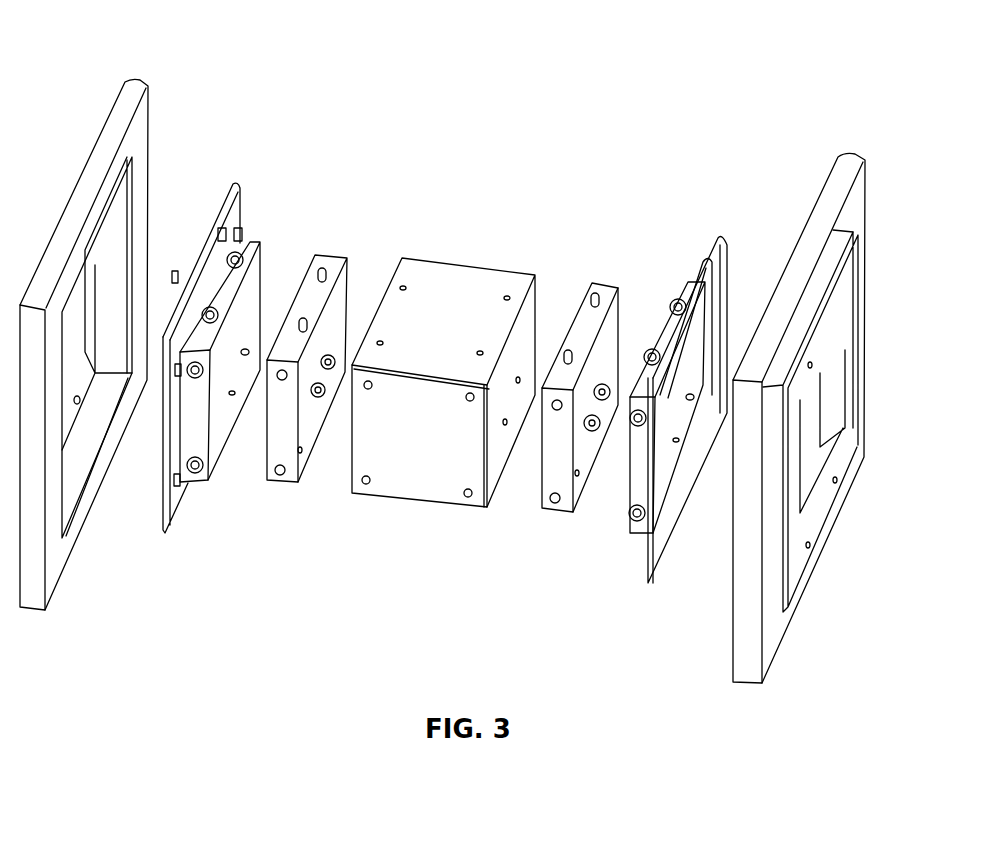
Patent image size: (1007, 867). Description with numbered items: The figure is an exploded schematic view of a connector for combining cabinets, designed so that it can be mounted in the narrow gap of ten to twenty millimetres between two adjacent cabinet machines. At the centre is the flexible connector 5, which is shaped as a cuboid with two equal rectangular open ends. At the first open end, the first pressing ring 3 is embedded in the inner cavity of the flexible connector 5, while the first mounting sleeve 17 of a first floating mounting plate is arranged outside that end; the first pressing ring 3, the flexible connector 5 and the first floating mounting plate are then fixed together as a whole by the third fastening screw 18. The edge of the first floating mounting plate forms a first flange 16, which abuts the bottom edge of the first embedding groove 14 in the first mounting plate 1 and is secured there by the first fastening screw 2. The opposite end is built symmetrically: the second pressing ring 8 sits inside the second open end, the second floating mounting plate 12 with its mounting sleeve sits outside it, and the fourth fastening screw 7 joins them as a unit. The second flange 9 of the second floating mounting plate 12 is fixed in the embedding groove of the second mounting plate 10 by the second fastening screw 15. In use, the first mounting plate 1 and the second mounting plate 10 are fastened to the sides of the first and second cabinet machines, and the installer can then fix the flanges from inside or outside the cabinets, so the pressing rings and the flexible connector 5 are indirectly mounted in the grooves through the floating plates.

The first mounting plate 1 is at (147, 114).
The first fastening screw 2 is at (192, 488).
The first pressing ring 3 is at (330, 257).
The flexible connector 5 is at (447, 268).
The fourth fastening screw 7 is at (555, 507).
The second pressing ring 8 is at (612, 287).
The second flange 9 is at (718, 233).
The second mounting plate 10 is at (848, 177).
The second floating mounting plate 12 is at (677, 477).
The first embedding groove 14 is at (72, 485).
The second fastening screw 15 is at (692, 277).
The first flange 16 is at (235, 185).
The first mounting sleeve 17 is at (252, 248).
The third fastening screw 18 is at (280, 478).